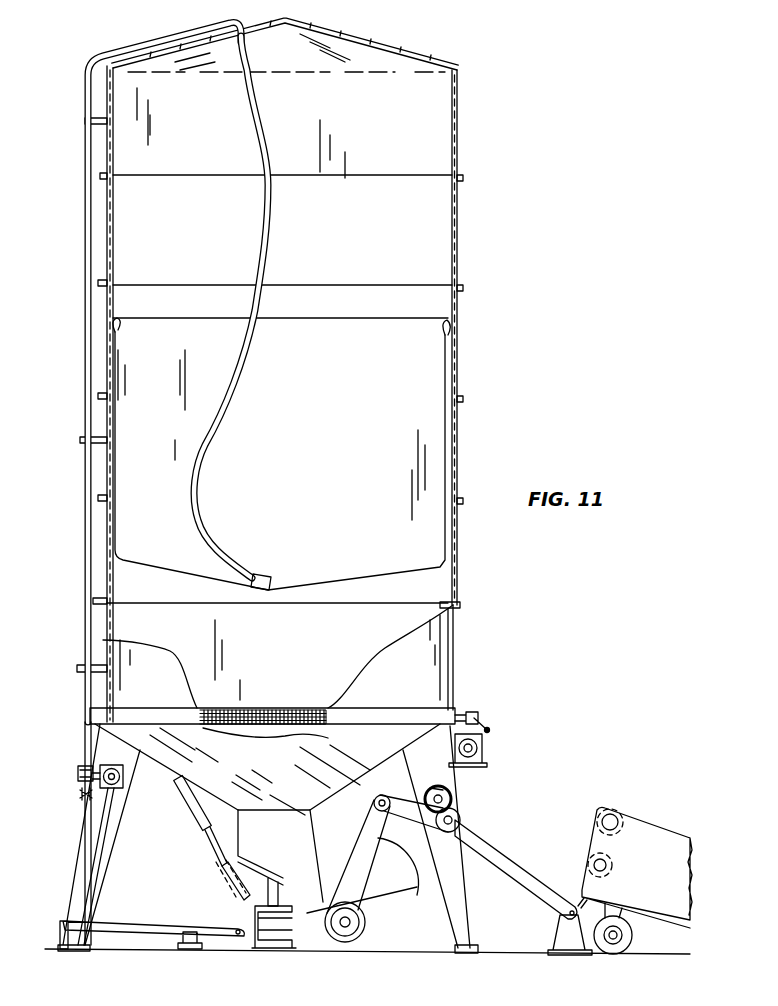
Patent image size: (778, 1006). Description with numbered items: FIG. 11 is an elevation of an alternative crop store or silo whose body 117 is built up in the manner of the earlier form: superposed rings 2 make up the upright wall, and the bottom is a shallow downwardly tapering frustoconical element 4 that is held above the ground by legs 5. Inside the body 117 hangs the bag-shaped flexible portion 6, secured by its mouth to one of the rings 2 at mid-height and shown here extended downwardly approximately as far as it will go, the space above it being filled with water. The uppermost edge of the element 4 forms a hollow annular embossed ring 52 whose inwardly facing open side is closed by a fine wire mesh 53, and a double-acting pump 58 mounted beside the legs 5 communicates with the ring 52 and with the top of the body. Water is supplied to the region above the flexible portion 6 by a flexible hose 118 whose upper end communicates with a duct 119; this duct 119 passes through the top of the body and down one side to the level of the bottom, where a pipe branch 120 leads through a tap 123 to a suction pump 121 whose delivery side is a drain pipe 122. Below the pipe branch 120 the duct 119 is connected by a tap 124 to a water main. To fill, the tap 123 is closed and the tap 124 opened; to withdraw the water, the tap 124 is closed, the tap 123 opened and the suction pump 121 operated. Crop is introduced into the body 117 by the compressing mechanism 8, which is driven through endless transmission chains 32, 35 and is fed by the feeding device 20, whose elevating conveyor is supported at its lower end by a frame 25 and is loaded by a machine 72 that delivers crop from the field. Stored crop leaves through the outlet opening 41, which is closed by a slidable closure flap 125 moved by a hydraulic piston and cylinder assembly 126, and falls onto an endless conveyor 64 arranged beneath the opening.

The rings 2 is at (460, 203).
The frustoconical element 4 is at (175, 757).
The legs 5 is at (88, 837).
The flexible portion 6 is at (267, 378).
The compressing mechanism 8 is at (412, 888).
The feeding device 20 is at (542, 848).
The frame 25 is at (570, 930).
The endless transmission chain 32 is at (352, 873).
The endless transmission chain 35 is at (411, 797).
The outlet opening 41 is at (235, 835).
The annular embossed ring 52 is at (420, 694).
The wire mesh 53 is at (312, 694).
The double-acting pump 58 is at (483, 752).
The endless conveyor 64 is at (146, 903).
The machine 72 is at (632, 824).
The body 117 is at (452, 648).
The flexible hose 118 is at (257, 118).
The duct 119 is at (132, 52).
The pipe branch 120 is at (80, 768).
The suction pump 121 is at (128, 756).
The drain pipe 122 is at (150, 855).
The tap 123 is at (78, 774).
The tap 124 is at (80, 793).
The slidable closure flap 125 is at (234, 896).
The hydraulic piston and cylinder assembly 126 is at (198, 816).